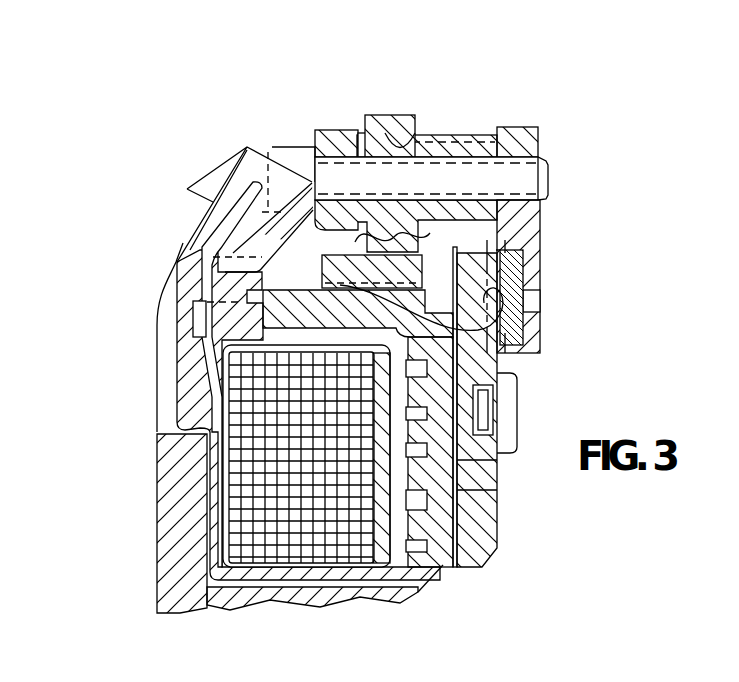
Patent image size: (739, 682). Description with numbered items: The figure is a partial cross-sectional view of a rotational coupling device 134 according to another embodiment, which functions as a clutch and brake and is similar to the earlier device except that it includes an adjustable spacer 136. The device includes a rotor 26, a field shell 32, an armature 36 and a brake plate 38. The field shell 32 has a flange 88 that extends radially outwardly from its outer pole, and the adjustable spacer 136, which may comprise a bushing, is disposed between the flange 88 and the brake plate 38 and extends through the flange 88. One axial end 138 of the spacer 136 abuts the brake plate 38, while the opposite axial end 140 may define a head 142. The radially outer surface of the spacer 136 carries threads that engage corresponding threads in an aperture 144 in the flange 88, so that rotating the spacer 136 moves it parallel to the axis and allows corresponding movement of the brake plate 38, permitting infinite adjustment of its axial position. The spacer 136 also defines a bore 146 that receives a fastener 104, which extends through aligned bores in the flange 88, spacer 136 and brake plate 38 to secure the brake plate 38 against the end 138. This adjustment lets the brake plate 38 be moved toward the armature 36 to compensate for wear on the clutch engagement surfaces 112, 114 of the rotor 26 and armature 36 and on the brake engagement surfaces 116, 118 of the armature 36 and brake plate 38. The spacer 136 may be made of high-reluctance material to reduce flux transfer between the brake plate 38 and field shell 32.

The rotor 26 is at (432, 576).
The field shell 32 is at (174, 524).
The armature 36 is at (500, 358).
The brake plate 38 is at (527, 233).
The flange 88 is at (388, 108).
The fastener 104 is at (532, 173).
The clutch engagement surface 112 is at (455, 562).
The clutch engagement surface 114 is at (448, 536).
The brake engagement surface 116 is at (340, 285).
The brake engagement surface 118 is at (509, 263).
The rotational coupling device 134 is at (108, 238).
The adjustable spacer 136 is at (452, 126).
The axial end 138 is at (486, 124).
The axial end 140 is at (317, 125).
The head 142 is at (340, 143).
The aperture 144 is at (383, 123).
The bore 146 is at (446, 140).